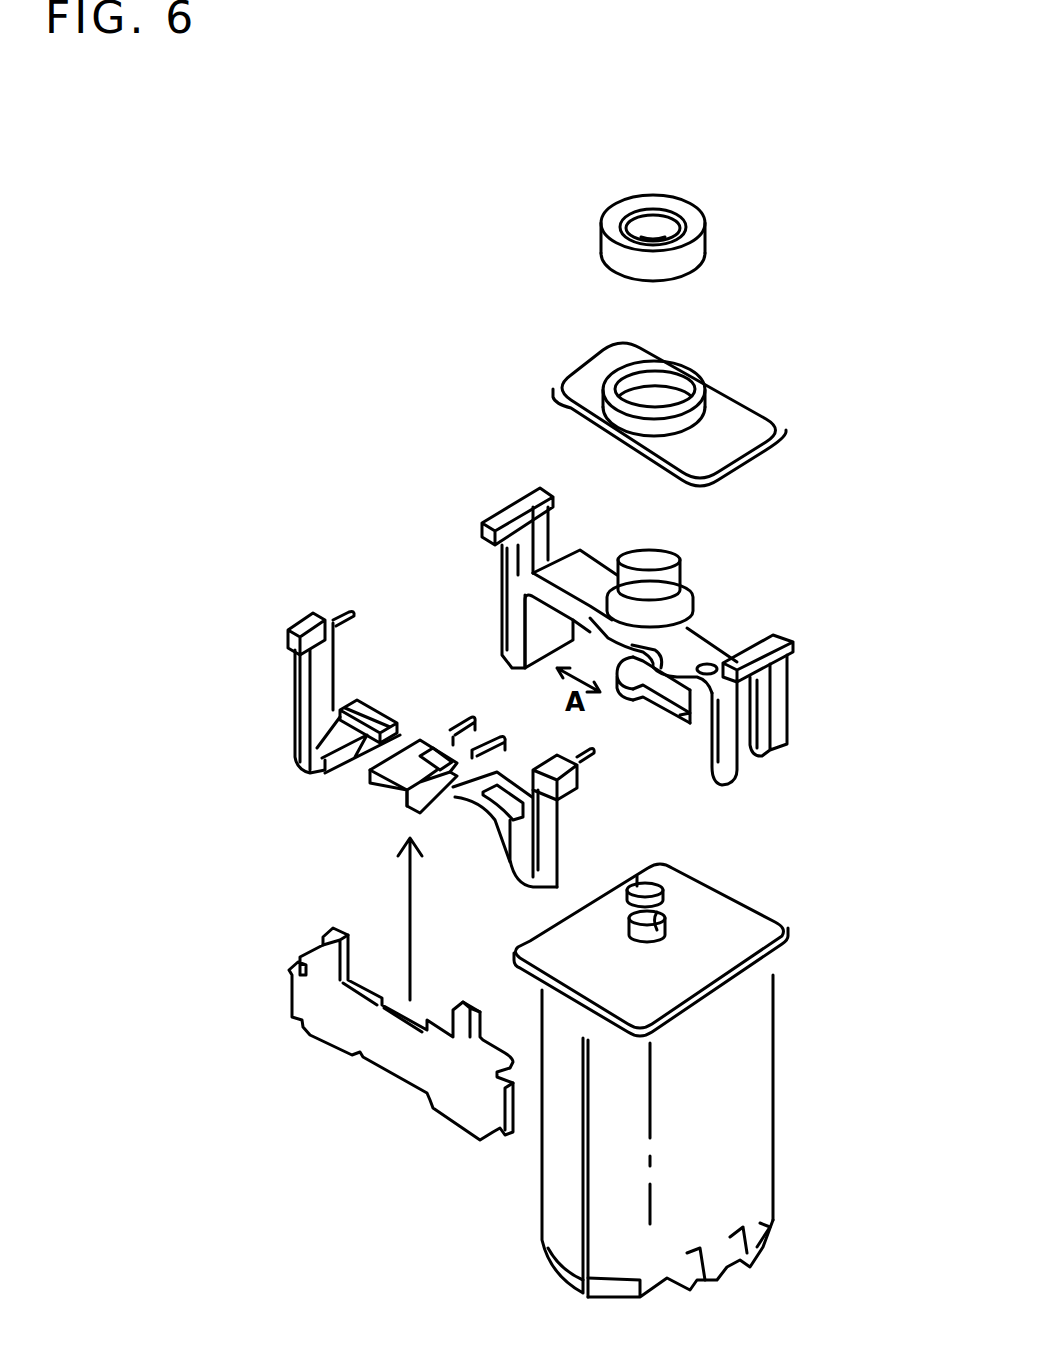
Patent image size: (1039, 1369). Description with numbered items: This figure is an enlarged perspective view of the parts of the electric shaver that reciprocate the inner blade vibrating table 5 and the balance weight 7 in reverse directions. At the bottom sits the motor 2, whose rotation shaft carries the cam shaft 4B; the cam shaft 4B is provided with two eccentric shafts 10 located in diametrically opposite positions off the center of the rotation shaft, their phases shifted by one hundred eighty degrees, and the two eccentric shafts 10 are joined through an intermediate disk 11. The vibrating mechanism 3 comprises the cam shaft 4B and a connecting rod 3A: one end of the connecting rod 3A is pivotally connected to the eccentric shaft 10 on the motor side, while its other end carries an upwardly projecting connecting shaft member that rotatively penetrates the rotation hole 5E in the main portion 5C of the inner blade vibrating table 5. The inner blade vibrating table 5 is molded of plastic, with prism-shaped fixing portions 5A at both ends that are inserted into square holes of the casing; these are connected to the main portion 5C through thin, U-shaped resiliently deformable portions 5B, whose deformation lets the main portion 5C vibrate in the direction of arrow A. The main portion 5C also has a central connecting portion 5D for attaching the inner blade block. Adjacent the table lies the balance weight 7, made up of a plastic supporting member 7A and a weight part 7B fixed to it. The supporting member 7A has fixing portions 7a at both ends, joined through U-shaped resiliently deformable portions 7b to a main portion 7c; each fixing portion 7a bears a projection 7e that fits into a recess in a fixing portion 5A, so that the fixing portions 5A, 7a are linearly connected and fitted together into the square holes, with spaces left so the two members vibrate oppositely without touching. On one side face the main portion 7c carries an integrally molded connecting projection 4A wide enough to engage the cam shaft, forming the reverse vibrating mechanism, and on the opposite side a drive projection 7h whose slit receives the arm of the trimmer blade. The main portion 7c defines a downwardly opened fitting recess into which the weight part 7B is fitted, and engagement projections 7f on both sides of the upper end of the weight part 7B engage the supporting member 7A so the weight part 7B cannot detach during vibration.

The motor 2 is at (763, 1172).
The vibrating mechanism 3 is at (672, 754).
The connecting rod 3A is at (673, 728).
The connecting projection 4A is at (455, 723).
The cam shaft 4B is at (692, 926).
The inner blade vibrating table 5 is at (659, 603).
The fixing portions 5A is at (513, 503).
The resiliently deformable portions 5B is at (512, 562).
The main portion 5C is at (578, 565).
The connecting portion 5D is at (650, 557).
The rotation hole 5E is at (713, 665).
The balance weight 7 is at (403, 874).
The supporting member 7A is at (300, 798).
The weight part 7B is at (472, 1110).
The fixing portions 7a is at (303, 627).
The resiliently deformable portions 7b is at (313, 678).
The main portion 7c is at (370, 703).
The projection 7e is at (343, 615).
The engagement projections 7f is at (300, 940).
The drive projection 7h is at (368, 790).
The eccentric shafts 10 is at (637, 883).
The intermediate disk 11 is at (667, 890).